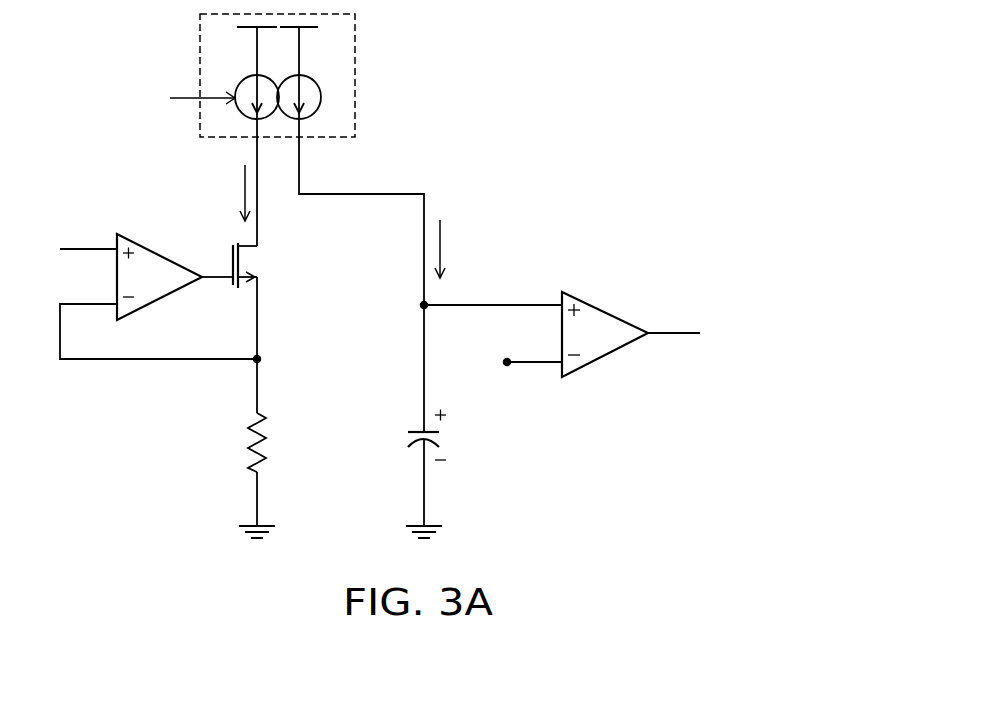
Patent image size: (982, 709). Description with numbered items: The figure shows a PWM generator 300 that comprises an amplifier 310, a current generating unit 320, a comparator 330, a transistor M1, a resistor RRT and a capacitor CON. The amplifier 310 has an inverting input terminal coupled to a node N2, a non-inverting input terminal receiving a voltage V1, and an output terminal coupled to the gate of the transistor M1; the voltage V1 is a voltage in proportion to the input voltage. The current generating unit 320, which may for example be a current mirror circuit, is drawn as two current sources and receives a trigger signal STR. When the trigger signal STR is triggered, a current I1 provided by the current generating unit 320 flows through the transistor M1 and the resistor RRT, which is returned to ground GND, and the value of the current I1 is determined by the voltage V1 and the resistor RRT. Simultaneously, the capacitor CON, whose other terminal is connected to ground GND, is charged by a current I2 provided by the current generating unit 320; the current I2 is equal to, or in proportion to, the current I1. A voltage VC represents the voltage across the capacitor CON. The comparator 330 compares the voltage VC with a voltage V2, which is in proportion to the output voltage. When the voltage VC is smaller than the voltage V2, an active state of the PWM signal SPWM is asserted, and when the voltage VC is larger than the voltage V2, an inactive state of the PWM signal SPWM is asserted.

The PWM generator 300 is at (693, 57).
The amplifier 310 is at (165, 252).
The current generating unit 320 is at (356, 78).
The comparator 330 is at (611, 306).
The transistor M1 is at (262, 261).
The node N2 is at (262, 359).
The resistor RRT is at (246, 438).
The capacitor CON is at (389, 440).
The current I1 is at (231, 193).
The current I2 is at (452, 249).
The trigger signal STR is at (175, 91).
The voltage V1 is at (69, 250).
The voltage V2 is at (514, 364).
The voltage VC is at (441, 438).
The PWM signal SPWM is at (705, 340).
The ground GND is at (252, 549).